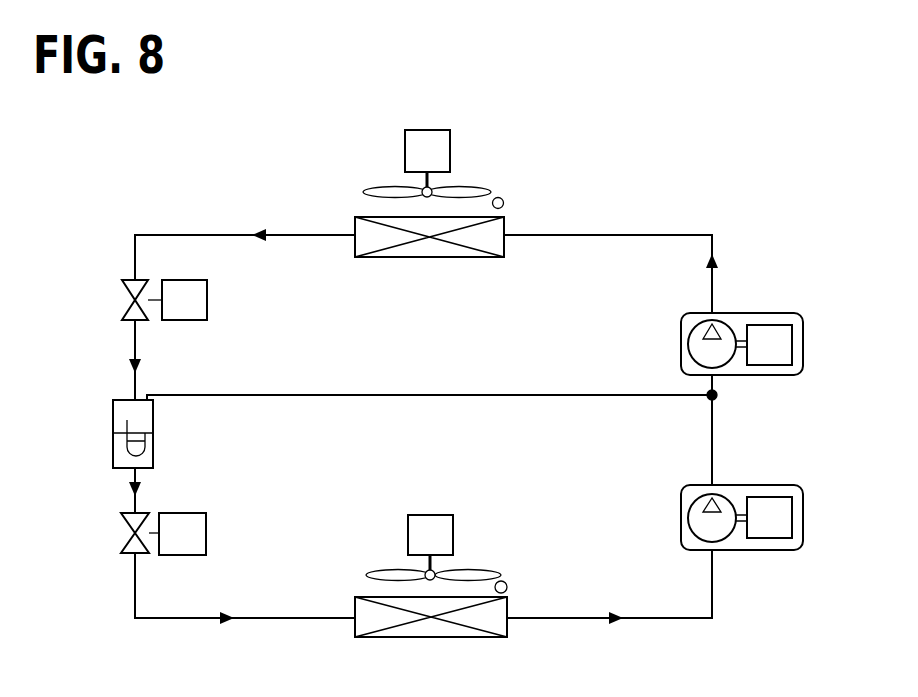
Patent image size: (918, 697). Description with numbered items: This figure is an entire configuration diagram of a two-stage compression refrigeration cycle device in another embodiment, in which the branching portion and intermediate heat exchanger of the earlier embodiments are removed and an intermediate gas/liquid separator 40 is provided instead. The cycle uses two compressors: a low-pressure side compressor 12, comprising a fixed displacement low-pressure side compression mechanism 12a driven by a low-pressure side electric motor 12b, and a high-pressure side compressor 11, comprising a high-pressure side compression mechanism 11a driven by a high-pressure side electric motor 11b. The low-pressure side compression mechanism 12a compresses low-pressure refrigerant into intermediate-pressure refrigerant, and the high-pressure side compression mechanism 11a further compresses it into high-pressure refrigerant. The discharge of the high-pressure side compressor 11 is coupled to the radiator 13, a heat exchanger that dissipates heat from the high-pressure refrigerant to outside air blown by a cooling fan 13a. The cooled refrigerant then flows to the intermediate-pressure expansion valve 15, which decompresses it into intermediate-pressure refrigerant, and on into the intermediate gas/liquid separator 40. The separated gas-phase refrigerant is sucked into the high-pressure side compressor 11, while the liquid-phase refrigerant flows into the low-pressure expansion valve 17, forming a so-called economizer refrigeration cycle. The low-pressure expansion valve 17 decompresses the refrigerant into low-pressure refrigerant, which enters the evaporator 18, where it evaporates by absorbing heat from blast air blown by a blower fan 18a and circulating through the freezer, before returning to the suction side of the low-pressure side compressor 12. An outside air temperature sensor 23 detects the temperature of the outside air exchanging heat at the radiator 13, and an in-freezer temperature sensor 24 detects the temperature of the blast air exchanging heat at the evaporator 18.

The high-pressure side compressor 11 is at (704, 341).
The high-pressure side compression mechanism 11a is at (681, 338).
The high-pressure side electric motor 11b is at (768, 365).
The low-pressure side compressor 12 is at (704, 544).
The low-pressure side compression mechanism 12a is at (681, 513).
The low-pressure side electric motor 12b is at (768, 550).
The radiator 13 is at (355, 219).
The cooling fan 13a is at (405, 160).
The intermediate-pressure expansion valve 15 is at (207, 300).
The low-pressure expansion valve 17 is at (206, 518).
The evaporator 18 is at (355, 603).
The blower fan 18a is at (408, 545).
The outside air temperature sensor 23 is at (504, 199).
The in-freezer temperature sensor 24 is at (507, 583).
The intermediate gas/liquid separator 40 is at (153, 431).